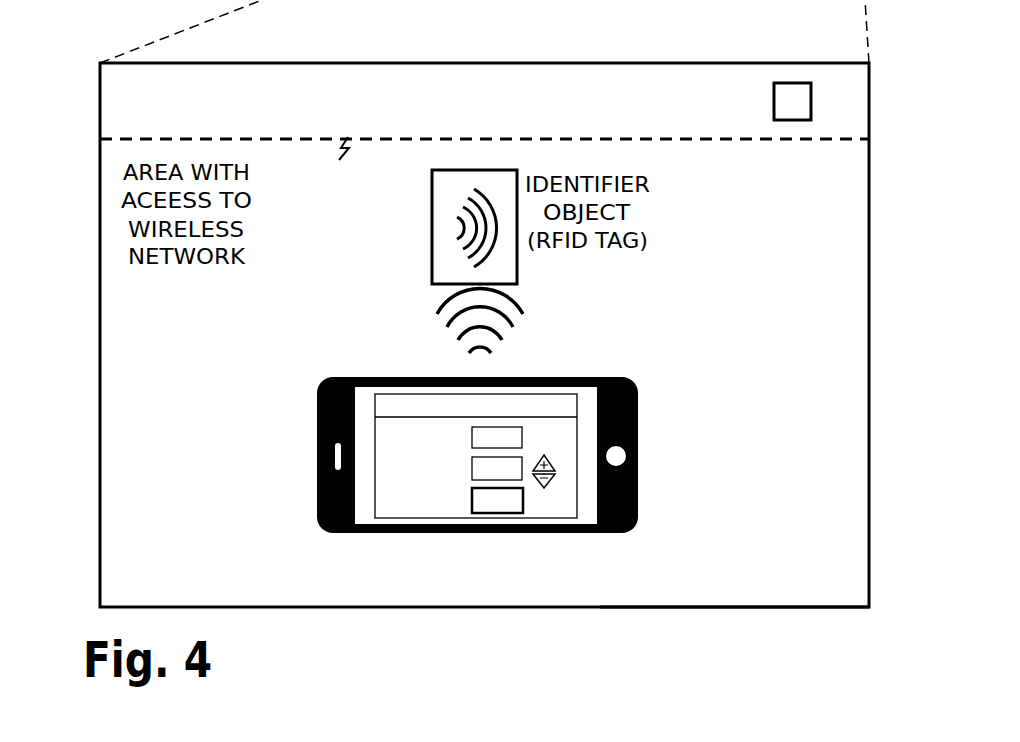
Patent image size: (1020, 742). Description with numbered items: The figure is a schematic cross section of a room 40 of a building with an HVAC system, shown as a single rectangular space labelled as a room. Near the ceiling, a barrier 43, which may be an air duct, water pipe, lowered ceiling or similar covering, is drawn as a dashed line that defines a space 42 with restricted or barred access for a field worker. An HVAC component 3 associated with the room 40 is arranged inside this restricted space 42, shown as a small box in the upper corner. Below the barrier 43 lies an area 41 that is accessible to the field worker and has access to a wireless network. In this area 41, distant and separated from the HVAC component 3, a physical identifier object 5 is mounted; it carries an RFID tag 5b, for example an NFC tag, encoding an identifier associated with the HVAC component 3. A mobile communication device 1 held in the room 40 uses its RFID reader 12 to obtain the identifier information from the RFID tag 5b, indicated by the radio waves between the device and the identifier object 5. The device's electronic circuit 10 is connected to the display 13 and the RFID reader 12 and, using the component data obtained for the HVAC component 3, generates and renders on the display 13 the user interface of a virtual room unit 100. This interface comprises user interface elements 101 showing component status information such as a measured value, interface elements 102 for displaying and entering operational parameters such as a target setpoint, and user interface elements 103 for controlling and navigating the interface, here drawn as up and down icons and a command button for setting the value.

The mobile communication device 1 is at (459, 459).
The HVAC component 3 is at (800, 102).
The physical identifier object 5 is at (461, 235).
The RFID tag 5b is at (508, 270).
The electronic circuit 10 is at (622, 414).
The RFID reader 12 is at (479, 372).
The display 13 is at (585, 519).
The room 40 is at (97, 419).
The area 41 is at (838, 598).
The space 42 is at (110, 123).
The barrier 43 is at (338, 163).
The virtual room unit 100 is at (478, 459).
The user interface elements for displaying component data 101 is at (533, 437).
The interface elements for operational parameters 102 is at (464, 486).
The user interface elements for controlling and navigating 103 is at (546, 491).